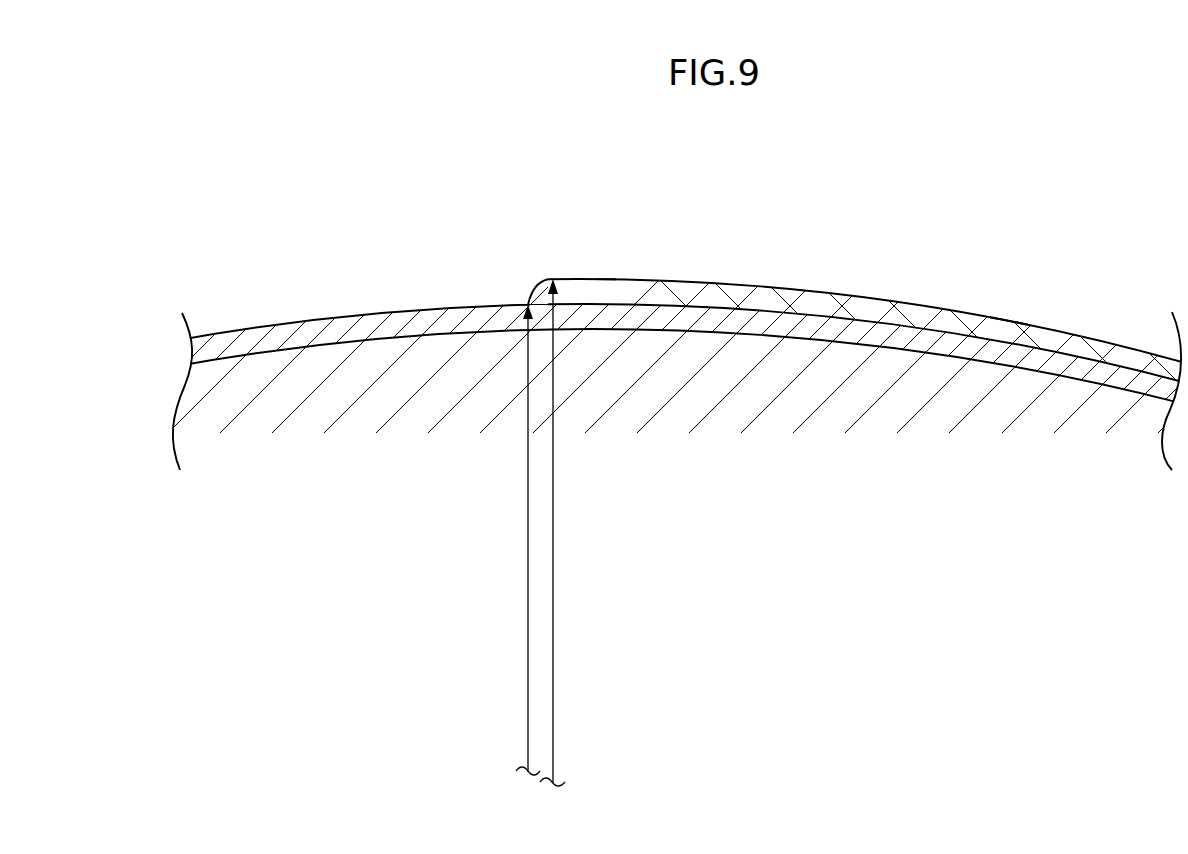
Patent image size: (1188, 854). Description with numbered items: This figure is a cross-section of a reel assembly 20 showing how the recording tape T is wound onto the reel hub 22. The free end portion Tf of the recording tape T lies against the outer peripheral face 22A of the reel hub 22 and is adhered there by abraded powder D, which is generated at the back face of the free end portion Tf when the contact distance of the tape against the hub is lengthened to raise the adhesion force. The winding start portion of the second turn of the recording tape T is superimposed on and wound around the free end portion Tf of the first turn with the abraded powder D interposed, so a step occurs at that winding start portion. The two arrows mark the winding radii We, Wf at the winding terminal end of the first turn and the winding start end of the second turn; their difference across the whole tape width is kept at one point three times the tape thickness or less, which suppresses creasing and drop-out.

The tire / rubber member 20 is at (368, 262).
The reel hub 22 is at (278, 374).
The outer peripheral face 22A is at (862, 325).
The recording tape T is at (1014, 309).
The free end portion Tf is at (606, 318).
The abraded powder D is at (580, 327).
The winding radius We is at (528, 630).
The winding radius Wf is at (555, 603).